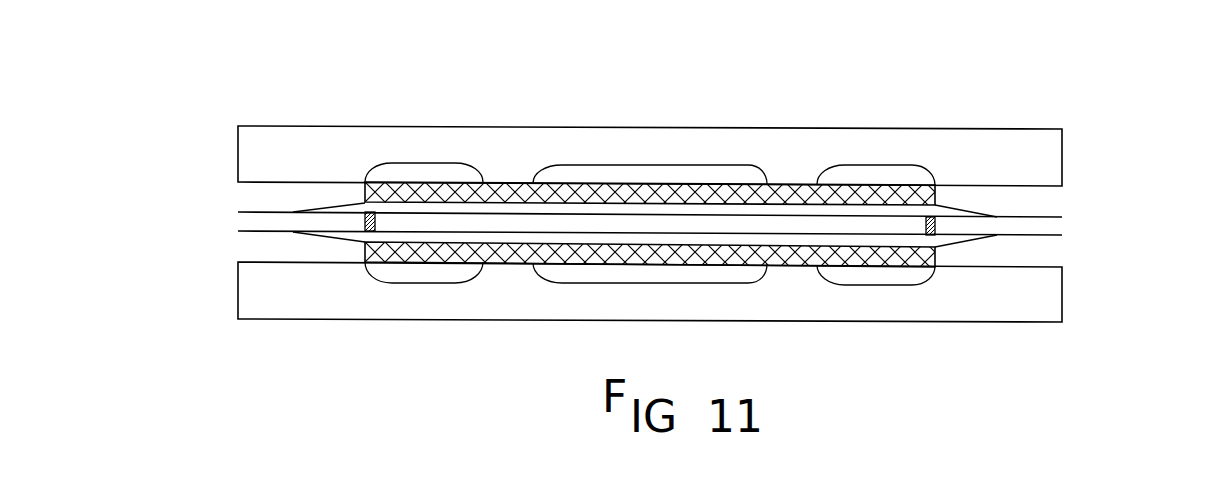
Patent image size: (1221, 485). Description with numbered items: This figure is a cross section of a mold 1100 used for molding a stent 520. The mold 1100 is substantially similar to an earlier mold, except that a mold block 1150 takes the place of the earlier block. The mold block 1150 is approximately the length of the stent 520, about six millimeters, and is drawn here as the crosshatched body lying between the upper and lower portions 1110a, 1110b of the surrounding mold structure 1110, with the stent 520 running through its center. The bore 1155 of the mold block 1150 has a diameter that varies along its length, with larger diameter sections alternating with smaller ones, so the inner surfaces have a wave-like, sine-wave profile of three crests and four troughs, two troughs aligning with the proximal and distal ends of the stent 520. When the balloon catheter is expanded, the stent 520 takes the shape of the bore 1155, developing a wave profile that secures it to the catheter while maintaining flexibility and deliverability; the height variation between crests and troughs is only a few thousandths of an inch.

The mold 1100 is at (278, 82).
The display panel 1110 is at (1003, 216).
The upper substrate plate 1110a is at (1062, 129).
The lower substrate plate 1110b is at (1062, 308).
The mold block 1150 is at (873, 165).
The bore 1155 is at (682, 185).
The stent 520 is at (365, 258).